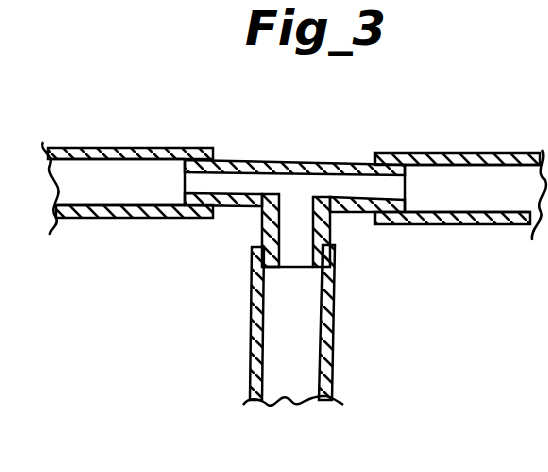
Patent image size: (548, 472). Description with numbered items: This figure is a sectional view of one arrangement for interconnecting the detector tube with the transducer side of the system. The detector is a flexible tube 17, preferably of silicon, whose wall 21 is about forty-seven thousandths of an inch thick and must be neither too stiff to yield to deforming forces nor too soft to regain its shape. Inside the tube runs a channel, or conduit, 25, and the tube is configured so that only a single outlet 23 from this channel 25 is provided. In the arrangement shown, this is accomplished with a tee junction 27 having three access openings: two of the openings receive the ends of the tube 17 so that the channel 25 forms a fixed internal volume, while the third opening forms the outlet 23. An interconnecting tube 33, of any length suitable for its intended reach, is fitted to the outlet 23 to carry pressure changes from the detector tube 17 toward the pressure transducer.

The tube 17 is at (143, 148).
The wall 21 is at (182, 150).
The channel 25 is at (135, 188).
The tee junction 27 is at (247, 202).
The outlet 23 is at (298, 233).
The interconnecting tube 33 is at (305, 327).